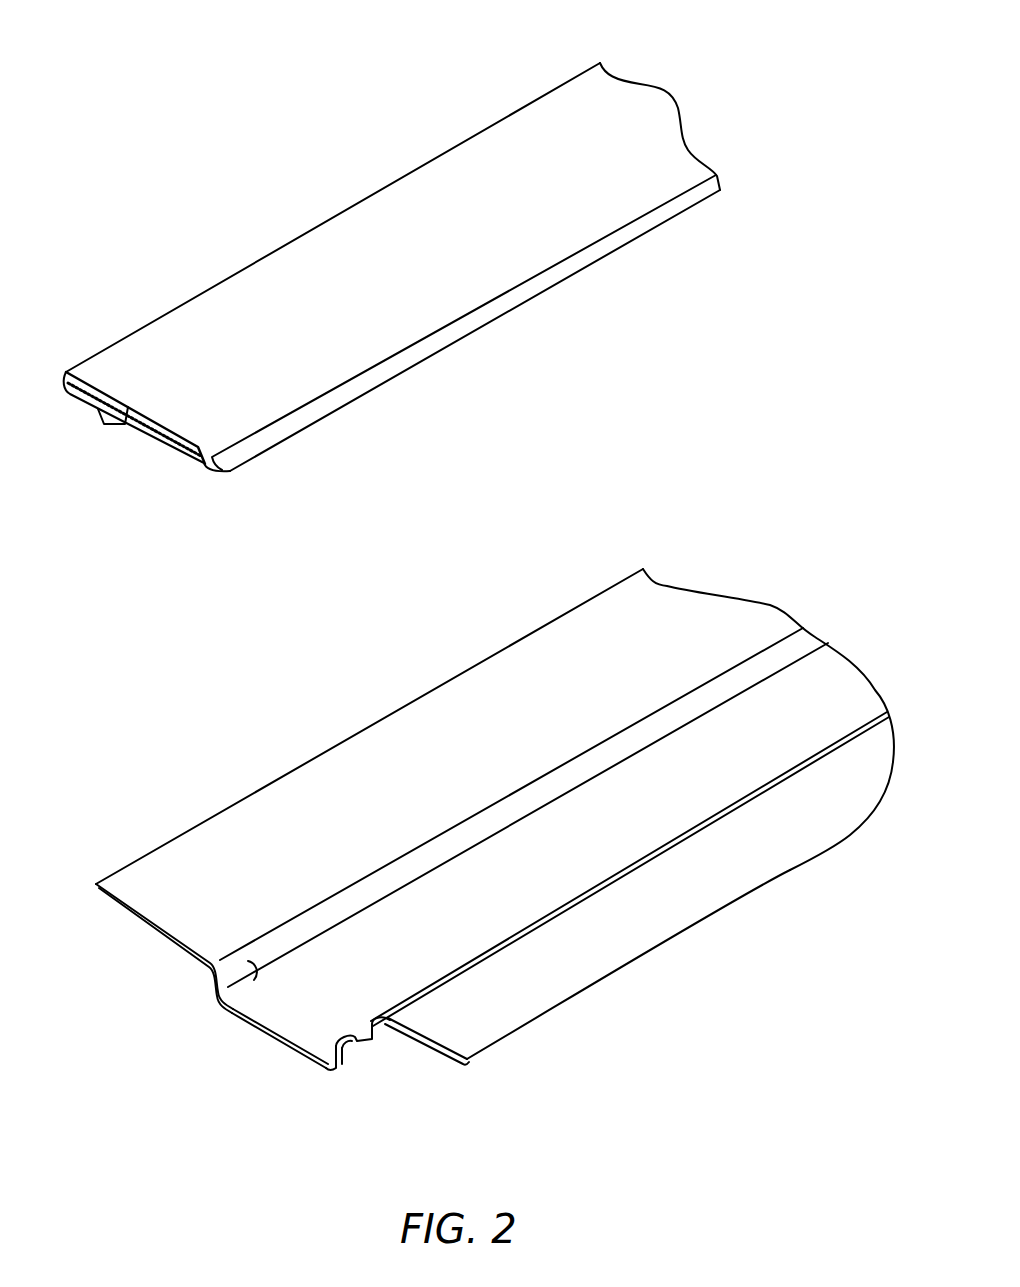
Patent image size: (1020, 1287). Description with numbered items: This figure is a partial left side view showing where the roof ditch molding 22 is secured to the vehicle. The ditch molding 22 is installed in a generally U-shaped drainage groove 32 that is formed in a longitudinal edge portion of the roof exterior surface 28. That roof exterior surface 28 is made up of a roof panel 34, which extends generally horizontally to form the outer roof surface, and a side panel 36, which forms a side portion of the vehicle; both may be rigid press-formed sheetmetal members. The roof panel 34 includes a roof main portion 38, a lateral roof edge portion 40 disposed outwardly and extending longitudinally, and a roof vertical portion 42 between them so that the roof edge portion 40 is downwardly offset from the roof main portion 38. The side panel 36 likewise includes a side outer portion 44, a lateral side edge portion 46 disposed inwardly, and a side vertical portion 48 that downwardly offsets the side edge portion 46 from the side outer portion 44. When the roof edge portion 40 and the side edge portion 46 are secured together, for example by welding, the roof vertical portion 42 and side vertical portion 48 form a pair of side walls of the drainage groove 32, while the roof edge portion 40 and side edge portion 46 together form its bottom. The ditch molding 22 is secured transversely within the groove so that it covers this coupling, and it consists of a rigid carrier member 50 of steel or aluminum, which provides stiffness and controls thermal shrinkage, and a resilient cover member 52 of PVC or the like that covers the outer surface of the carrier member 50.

The ditch molding 22 is at (448, 120).
The roof exterior surface 28 is at (752, 568).
The drainage groove 32 is at (460, 902).
The roof panel 34 is at (297, 730).
The side panel 36 is at (735, 942).
The roof main portion 38 is at (220, 855).
The lateral roof edge portion 40 is at (297, 992).
The roof vertical portion 42 is at (215, 1001).
The side outer portion 44 is at (488, 1028).
The lateral side edge portion 46 is at (283, 1057).
The side vertical portion 48 is at (353, 1057).
The carrier member 50 is at (190, 455).
The cover member 52 is at (205, 318).